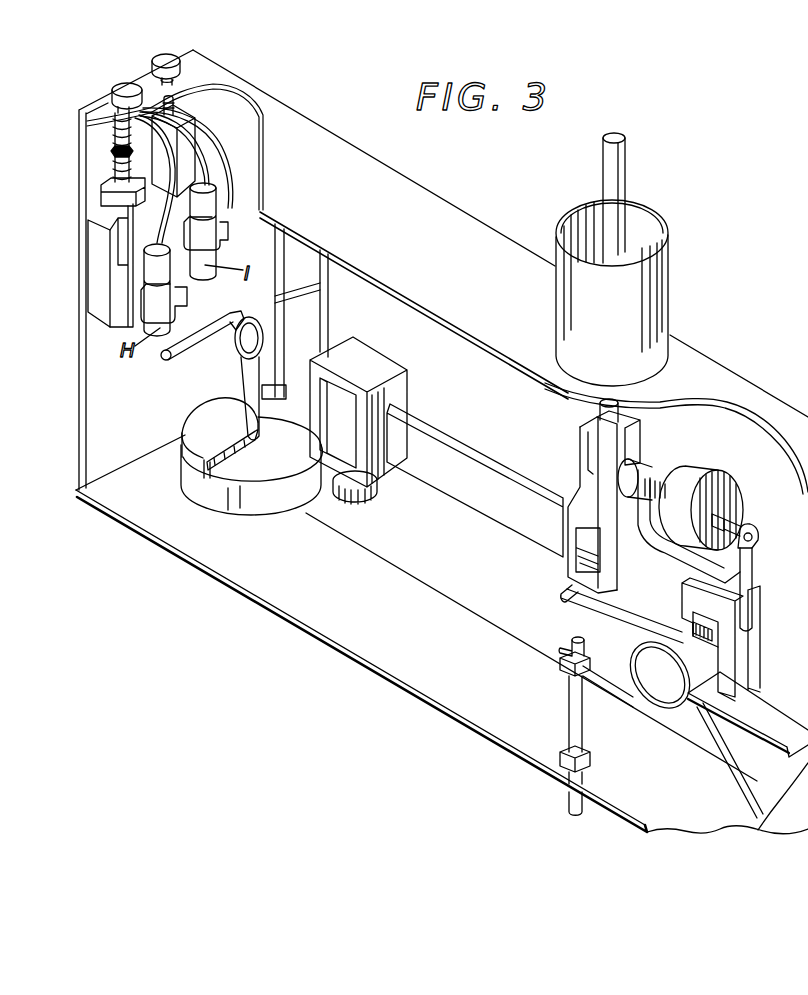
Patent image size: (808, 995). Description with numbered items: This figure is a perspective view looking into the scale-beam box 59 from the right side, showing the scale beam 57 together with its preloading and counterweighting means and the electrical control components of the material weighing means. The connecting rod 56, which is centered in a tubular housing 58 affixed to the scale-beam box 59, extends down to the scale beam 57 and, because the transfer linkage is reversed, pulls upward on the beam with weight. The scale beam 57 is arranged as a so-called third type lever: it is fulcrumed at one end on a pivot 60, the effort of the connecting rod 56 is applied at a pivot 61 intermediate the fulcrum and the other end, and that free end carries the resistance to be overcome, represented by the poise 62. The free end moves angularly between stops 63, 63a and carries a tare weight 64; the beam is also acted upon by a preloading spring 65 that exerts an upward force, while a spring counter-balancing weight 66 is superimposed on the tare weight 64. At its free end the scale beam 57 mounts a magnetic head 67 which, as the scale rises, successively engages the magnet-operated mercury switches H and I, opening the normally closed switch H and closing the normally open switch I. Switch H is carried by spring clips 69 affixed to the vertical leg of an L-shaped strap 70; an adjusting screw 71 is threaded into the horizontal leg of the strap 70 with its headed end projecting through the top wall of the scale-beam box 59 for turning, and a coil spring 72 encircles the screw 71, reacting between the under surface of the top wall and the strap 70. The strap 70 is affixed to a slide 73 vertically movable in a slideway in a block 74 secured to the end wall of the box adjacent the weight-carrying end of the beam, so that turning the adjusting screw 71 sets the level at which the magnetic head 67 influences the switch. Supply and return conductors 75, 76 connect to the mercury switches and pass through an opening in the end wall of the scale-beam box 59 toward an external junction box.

The connecting rod 56 is at (615, 182).
The scale beam 57 is at (482, 493).
The tubular housing 58 is at (642, 276).
The scale-beam box 59 is at (440, 197).
The pivot 60 is at (716, 633).
The pivot 61 is at (568, 557).
The poise 62 is at (398, 383).
The stop 63 is at (287, 401).
The stop 63a is at (297, 294).
The tare weight 64 is at (257, 518).
The preloading spring 65 is at (628, 688).
The spring counter-balancing weight 66 is at (208, 441).
The magnetic head 67 is at (220, 333).
The spring clips 69 is at (143, 320).
The L-shaped strap 70 is at (110, 195).
The adjusting screw 71 is at (116, 128).
The coil spring 72 is at (111, 152).
The slide 73 is at (118, 281).
The block 74 is at (97, 263).
The supply conductor 75 is at (160, 181).
The return conductor 76 is at (182, 143).